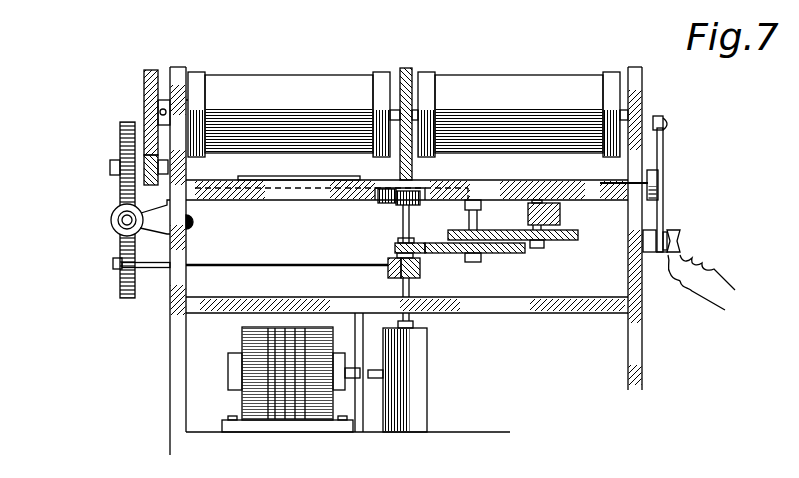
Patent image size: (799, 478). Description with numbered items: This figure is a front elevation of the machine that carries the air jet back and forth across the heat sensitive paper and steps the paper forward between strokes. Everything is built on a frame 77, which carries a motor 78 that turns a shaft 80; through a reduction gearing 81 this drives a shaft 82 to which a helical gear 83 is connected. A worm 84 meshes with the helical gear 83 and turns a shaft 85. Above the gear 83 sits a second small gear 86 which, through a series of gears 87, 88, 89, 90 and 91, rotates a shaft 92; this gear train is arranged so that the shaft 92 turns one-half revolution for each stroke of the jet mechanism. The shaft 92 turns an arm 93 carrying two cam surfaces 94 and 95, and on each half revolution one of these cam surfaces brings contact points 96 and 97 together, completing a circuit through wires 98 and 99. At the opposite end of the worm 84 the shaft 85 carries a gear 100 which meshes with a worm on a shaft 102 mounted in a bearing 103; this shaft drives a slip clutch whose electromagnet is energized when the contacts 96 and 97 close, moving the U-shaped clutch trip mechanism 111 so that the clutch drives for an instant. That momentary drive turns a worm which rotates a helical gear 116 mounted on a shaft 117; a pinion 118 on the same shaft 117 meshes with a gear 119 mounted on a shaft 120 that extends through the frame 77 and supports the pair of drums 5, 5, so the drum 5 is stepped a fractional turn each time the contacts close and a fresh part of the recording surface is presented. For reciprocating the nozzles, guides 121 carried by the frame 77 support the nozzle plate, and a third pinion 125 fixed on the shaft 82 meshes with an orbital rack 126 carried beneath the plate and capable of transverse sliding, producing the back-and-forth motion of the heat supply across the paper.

The drum 5 is at (296, 75).
The frame 77 is at (170, 318).
The motor 78 is at (258, 412).
The shaft 80 is at (378, 385).
The reduction gearing 81 is at (432, 395).
The shaft 82 is at (412, 293).
The helical gear 83 is at (421, 275).
The worm 84 is at (390, 260).
The shaft 85 is at (268, 263).
The second small gear 86 is at (410, 244).
The gear 87 is at (523, 253).
The gear 88 is at (478, 230).
The gear 89 is at (578, 236).
The gear 90 is at (531, 230).
The gear 91 is at (560, 212).
The shaft 92 is at (645, 183).
The arm 93 is at (664, 214).
The cam surface 94 is at (668, 236).
The cam surface 95 is at (666, 124).
The contact point 96 is at (668, 254).
The contact point 97 is at (681, 240).
The wire 98 is at (696, 288).
The wire 99 is at (710, 272).
The gear 100 is at (113, 228).
The shaft 102 is at (114, 217).
The bearing 103 is at (157, 236).
The U-shaped clutch trip mechanism 111 is at (194, 222).
The helical gear 116 is at (118, 125).
The shaft 117 is at (109, 167).
The pinion 118 is at (147, 186).
The gear 119 is at (150, 69).
The shaft 120 is at (188, 72).
The guide 121 is at (214, 190).
The third pinion 125 is at (383, 204).
The orbital rack 126 is at (422, 204).